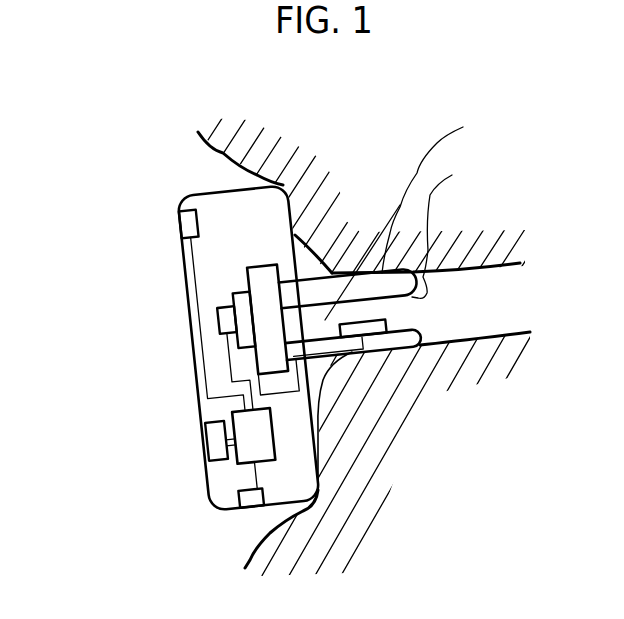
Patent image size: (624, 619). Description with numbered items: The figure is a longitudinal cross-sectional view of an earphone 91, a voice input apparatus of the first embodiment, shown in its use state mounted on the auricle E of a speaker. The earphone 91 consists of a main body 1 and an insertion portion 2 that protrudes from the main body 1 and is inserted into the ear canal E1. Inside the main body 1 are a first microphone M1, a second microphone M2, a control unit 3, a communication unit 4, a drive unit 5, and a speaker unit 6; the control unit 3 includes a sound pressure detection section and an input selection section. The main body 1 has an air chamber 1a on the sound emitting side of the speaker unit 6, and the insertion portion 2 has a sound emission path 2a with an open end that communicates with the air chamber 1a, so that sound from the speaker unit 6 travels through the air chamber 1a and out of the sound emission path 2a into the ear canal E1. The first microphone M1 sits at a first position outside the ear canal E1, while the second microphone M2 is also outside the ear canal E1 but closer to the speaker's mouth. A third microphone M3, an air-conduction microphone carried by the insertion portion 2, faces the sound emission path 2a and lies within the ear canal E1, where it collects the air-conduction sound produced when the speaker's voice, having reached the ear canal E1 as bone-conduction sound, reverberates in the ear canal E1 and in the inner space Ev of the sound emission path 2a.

The earphone 91 is at (160, 138).
The auricle E is at (233, 158).
The ear canal E1 is at (482, 273).
The inner space Ev is at (438, 192).
The main body 1 is at (187, 283).
The air chamber 1a is at (298, 240).
The insertion portion 2 is at (443, 231).
The sound emission path 2a is at (440, 270).
The control unit 3 is at (237, 455).
The communication unit 4 is at (205, 440).
The drive unit 5 is at (232, 297).
The speaker unit 6 is at (247, 268).
The first microphone M1 is at (185, 223).
The second microphone M2 is at (239, 502).
The third microphone M3 is at (372, 315).